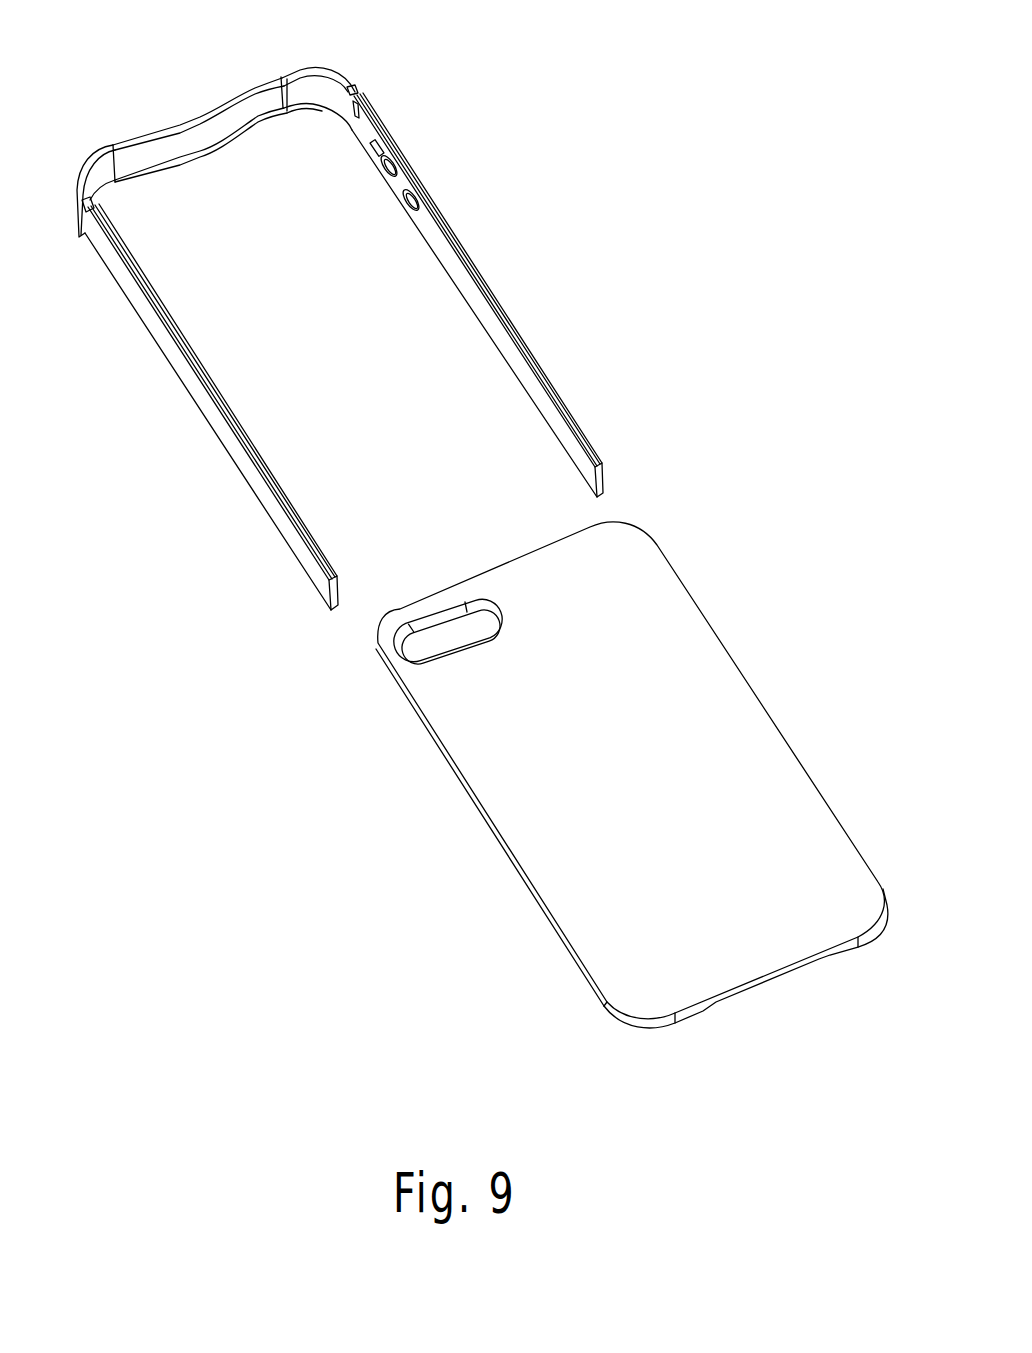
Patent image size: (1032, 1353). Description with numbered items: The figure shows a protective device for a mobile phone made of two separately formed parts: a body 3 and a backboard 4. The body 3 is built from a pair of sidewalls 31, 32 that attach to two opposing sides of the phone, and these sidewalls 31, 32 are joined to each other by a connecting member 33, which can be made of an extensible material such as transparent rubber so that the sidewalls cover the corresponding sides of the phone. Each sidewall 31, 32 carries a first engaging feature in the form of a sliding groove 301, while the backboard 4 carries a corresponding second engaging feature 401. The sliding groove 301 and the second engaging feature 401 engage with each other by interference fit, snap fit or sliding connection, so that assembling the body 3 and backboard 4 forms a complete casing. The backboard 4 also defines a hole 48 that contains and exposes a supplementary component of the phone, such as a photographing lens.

The body 3 is at (350, 313).
The connecting member 33 is at (238, 94).
The sidewall 31 is at (184, 371).
The sidewall 32 is at (474, 297).
The sliding groove 301 is at (258, 468).
The backboard 4 is at (603, 775).
The hole 48 is at (418, 650).
The second engaging feature 401 is at (505, 848).